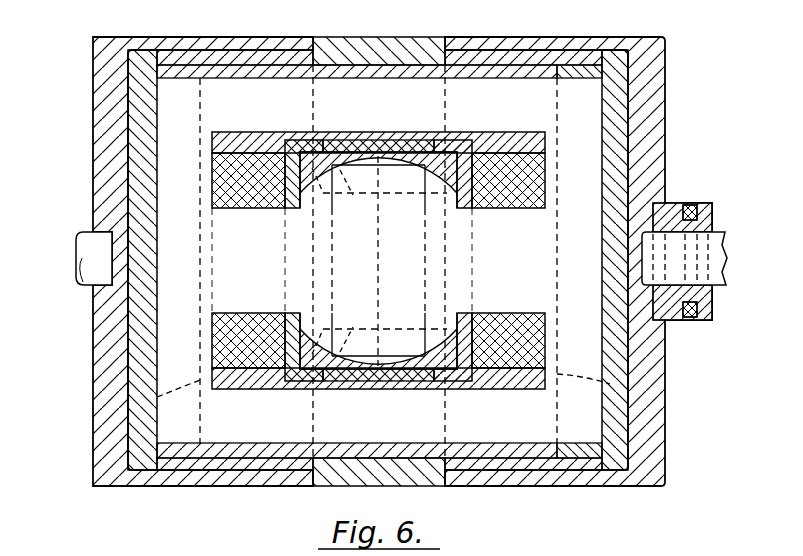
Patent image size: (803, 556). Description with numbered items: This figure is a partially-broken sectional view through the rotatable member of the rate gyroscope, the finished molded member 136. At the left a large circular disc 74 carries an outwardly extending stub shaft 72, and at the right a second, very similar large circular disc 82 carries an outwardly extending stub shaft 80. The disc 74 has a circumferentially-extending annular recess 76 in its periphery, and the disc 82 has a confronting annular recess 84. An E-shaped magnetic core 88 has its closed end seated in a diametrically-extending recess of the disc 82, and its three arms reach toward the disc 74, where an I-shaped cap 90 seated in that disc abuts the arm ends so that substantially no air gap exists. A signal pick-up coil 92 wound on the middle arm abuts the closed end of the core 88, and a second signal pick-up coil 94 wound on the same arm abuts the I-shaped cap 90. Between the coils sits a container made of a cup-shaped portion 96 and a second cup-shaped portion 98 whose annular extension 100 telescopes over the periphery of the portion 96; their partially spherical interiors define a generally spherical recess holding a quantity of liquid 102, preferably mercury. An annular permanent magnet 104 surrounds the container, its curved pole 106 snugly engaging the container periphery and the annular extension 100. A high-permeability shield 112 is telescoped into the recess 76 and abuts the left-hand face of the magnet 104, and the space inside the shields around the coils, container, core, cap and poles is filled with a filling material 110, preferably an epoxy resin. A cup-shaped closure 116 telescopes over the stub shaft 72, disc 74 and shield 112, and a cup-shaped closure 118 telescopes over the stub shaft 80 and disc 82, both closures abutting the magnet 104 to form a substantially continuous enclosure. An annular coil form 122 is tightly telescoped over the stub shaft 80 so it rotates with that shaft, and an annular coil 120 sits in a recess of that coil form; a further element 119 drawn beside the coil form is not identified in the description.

The stub shaft 72 is at (82, 251).
The large circular disc 74 is at (133, 420).
The annular recess 76 is at (203, 65).
The stub shaft 80 is at (726, 255).
The second large circular disc 82 is at (620, 408).
The annular recess 84 is at (598, 62).
The E-shaped magnetic core 88 is at (540, 115).
The I-shaped cap 90 is at (168, 332).
The signal pick-up coil 92 is at (495, 208).
The signal pick-up coil 94 is at (247, 203).
The cup-shaped portion 96 is at (462, 150).
The second cup-shaped portion 98 is at (300, 140).
The annular extension 100 is at (430, 150).
The liquid 102 is at (380, 150).
The permanent magnet 104 is at (374, 38).
The pole 106 is at (346, 152).
The filling material 110 is at (250, 132).
The shield 112 is at (247, 52).
The cup-shaped closure 116 is at (98, 50).
The cup-shaped closure 118 is at (662, 48).
The boss 119 is at (672, 205).
The annular coil 120 is at (690, 208).
The coil form 122 is at (712, 215).
The molded member 136 is at (32, 156).